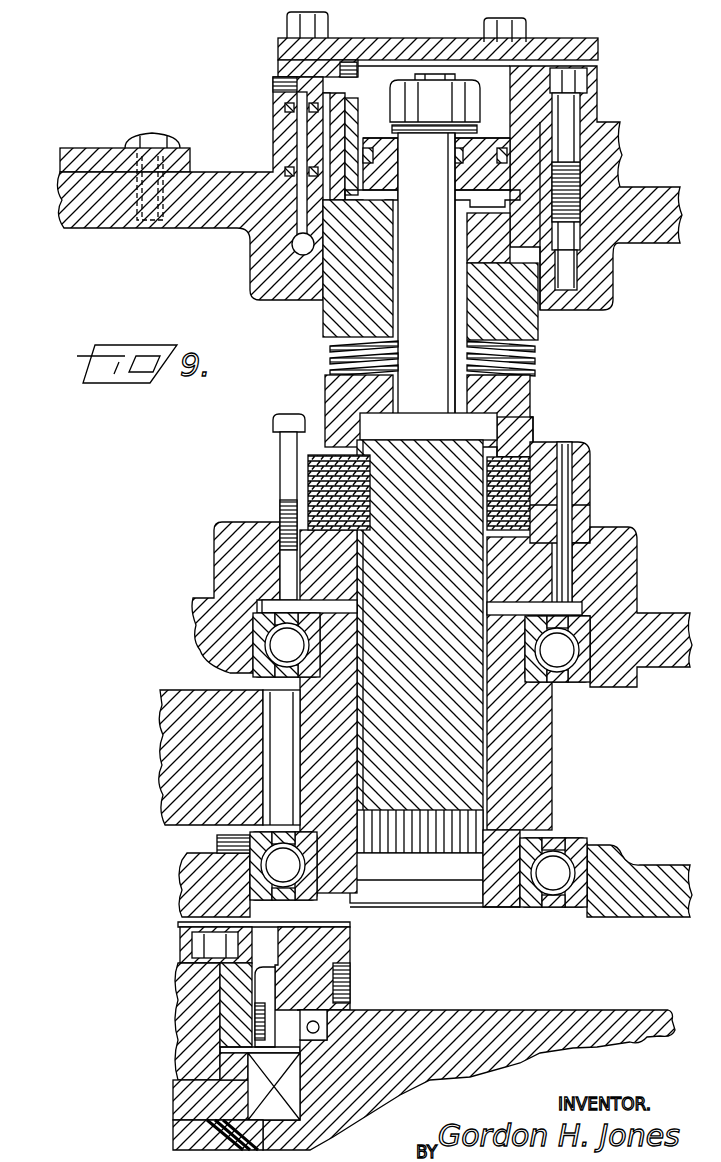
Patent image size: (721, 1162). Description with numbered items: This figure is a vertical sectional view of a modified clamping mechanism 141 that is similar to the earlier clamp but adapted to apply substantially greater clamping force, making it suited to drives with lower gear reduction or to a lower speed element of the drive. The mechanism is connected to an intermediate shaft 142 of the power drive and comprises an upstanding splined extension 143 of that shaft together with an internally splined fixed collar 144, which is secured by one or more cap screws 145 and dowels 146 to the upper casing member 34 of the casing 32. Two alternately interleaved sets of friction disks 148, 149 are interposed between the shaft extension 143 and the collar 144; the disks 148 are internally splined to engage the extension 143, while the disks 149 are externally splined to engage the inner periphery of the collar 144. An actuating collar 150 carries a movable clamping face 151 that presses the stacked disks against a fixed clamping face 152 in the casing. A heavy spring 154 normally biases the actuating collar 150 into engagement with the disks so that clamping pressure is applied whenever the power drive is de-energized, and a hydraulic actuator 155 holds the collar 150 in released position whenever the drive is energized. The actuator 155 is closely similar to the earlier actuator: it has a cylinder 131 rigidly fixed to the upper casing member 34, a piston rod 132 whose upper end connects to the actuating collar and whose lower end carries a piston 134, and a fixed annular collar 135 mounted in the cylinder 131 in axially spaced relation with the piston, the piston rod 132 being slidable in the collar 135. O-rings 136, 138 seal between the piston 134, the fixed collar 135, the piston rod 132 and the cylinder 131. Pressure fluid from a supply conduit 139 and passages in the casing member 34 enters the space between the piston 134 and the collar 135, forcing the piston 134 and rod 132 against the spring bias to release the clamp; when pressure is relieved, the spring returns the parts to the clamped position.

The cylinder 131 is at (600, 100).
The piston 134 is at (372, 152).
The O-ring 136 is at (408, 163).
The O-ring 138 is at (398, 200).
The supply conduit 139 is at (294, 248).
The fixed annular collar 135 is at (312, 296).
The hydraulic actuator 155 is at (323, 328).
The actuating collar 150 is at (327, 384).
The heavy spring 154 is at (532, 364).
The cap screw 145 is at (290, 415).
The movable clamping face 151 is at (330, 458).
The friction disks 149 is at (322, 518).
The friction disks 148 is at (484, 502).
The splined extension 143 is at (503, 440).
The clamping mechanism 141 is at (574, 435).
The dowel 146 is at (568, 472).
The internally splined fixed collar 144 is at (586, 495).
The fixed clamping face 152 is at (540, 530).
The piston rod 132 is at (442, 323).
The casing 32 is at (696, 186).
The upper casing member 34 is at (638, 586).
The intermediate shaft 142 is at (455, 780).